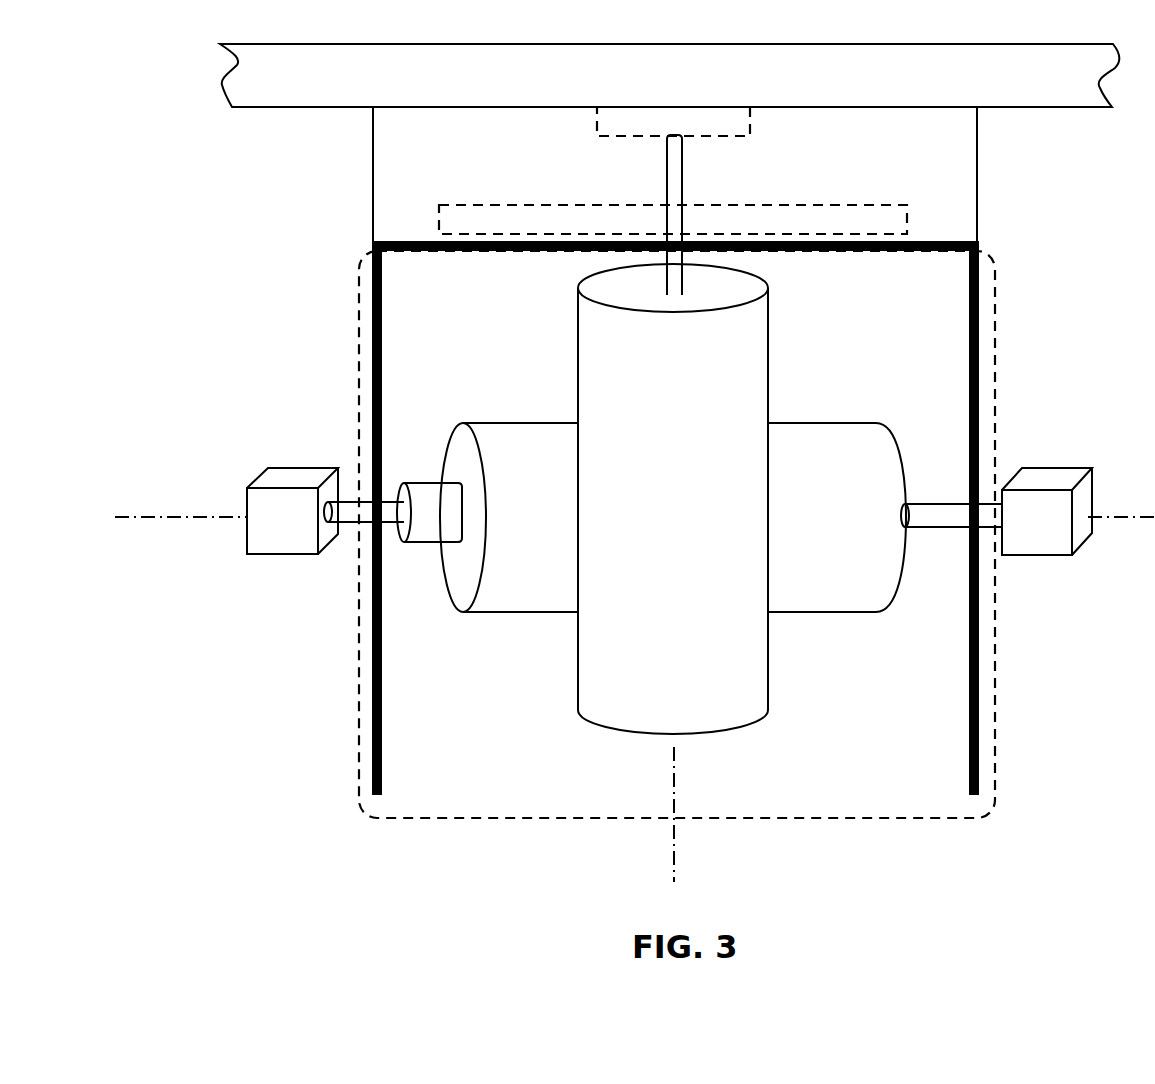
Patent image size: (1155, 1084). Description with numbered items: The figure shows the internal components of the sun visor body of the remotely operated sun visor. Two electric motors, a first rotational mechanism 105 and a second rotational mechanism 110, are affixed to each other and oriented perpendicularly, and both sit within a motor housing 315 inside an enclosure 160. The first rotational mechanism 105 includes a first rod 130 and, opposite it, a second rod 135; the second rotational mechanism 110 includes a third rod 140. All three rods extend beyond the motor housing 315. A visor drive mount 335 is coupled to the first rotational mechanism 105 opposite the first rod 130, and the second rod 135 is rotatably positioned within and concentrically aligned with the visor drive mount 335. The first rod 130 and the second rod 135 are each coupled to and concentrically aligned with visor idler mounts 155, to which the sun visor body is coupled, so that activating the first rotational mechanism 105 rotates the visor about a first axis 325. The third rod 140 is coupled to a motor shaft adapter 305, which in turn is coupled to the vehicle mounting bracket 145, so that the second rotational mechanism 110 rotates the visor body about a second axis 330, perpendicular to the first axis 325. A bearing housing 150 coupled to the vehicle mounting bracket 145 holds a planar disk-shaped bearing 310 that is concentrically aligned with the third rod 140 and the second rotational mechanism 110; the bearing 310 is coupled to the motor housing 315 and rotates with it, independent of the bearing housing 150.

The vehicle mounting bracket 145 is at (669, 75).
The bearing housing 150 is at (373, 137).
The motor shaft adapter 305 is at (750, 117).
The bearing 310 is at (907, 213).
The third rod 140 is at (667, 176).
The motor housing 315 is at (968, 722).
The enclosure 160 is at (358, 777).
The second rotational mechanism 110 is at (673, 499).
The first rotational mechanism 105 is at (673, 517).
The visor drive mount 335 is at (437, 437).
The second rod 135 is at (348, 525).
The first rod 130 is at (980, 500).
The visor idler mounts 155 is at (669, 511).
The first axis 325 is at (157, 520).
The second axis 330 is at (672, 833).